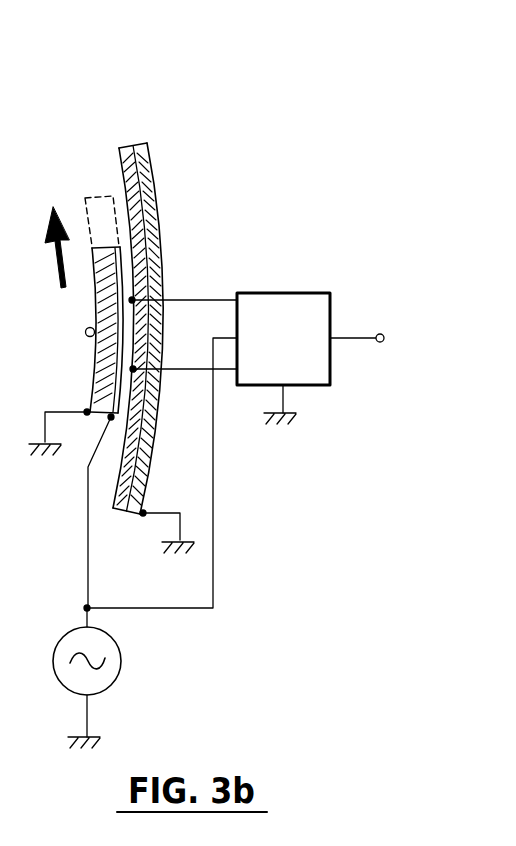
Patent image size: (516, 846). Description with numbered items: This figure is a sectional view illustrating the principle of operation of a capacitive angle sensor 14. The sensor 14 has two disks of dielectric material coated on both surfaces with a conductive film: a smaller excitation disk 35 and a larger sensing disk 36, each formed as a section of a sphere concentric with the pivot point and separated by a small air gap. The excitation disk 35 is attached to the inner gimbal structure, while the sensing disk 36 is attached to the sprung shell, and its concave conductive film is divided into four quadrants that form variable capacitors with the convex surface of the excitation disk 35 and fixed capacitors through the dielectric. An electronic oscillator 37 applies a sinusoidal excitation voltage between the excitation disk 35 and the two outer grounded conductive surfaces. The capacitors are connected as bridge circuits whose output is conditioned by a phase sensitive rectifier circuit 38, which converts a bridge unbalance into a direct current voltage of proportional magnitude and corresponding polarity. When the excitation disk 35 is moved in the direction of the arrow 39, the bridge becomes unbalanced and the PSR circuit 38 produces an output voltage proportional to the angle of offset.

The capacitive angle sensor 14 is at (104, 128).
The excitation disk 35 is at (97, 299).
The sensing disk 36 is at (150, 262).
The electronic oscillator 37 is at (102, 673).
The phase sensitive rectifier circuit 38 is at (312, 310).
The arrow 39 is at (59, 255).